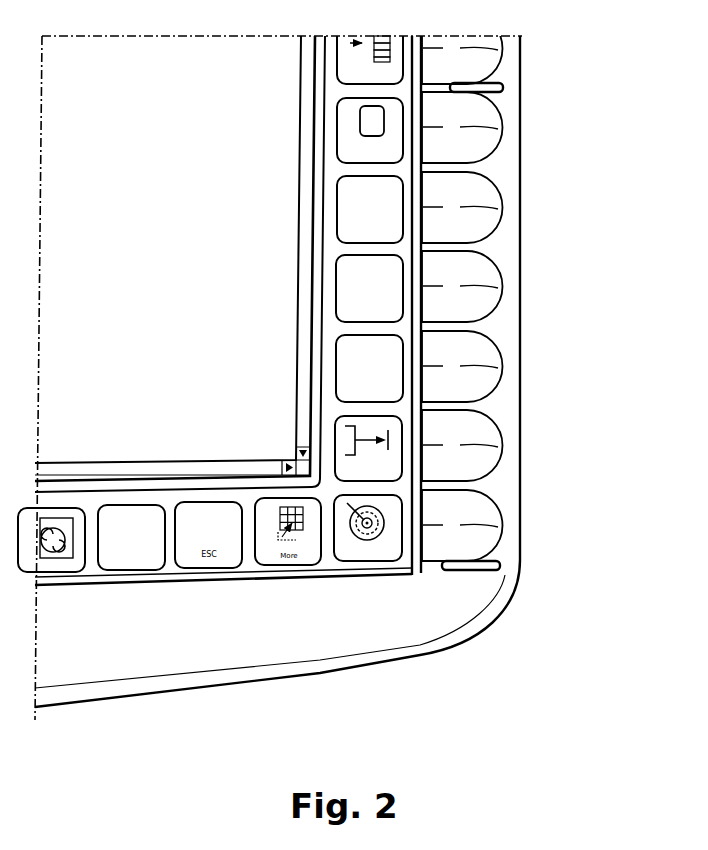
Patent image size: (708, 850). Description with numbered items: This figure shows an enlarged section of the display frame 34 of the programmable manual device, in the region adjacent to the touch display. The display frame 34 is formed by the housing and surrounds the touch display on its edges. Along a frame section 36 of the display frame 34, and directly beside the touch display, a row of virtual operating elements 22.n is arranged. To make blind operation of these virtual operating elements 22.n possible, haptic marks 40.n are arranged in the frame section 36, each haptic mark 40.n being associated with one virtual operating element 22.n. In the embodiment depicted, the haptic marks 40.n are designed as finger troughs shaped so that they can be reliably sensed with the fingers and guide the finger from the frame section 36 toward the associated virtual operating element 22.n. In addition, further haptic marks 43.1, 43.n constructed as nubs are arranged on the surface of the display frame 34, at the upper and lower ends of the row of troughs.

The display frame 34 is at (470, 608).
The frame section 36 is at (431, 290).
The virtual operating element 22.n is at (395, 506).
The haptic mark 40.n is at (466, 541).
The haptic mark 43.1 is at (505, 87).
The haptic mark 43.n is at (501, 564).